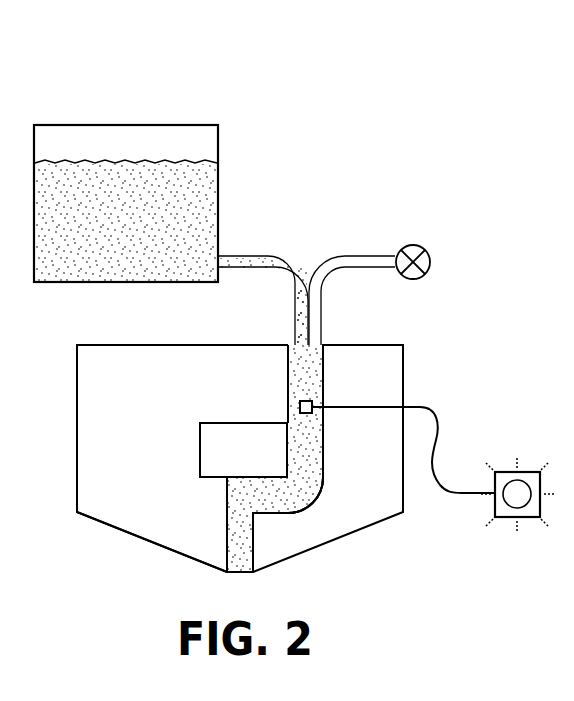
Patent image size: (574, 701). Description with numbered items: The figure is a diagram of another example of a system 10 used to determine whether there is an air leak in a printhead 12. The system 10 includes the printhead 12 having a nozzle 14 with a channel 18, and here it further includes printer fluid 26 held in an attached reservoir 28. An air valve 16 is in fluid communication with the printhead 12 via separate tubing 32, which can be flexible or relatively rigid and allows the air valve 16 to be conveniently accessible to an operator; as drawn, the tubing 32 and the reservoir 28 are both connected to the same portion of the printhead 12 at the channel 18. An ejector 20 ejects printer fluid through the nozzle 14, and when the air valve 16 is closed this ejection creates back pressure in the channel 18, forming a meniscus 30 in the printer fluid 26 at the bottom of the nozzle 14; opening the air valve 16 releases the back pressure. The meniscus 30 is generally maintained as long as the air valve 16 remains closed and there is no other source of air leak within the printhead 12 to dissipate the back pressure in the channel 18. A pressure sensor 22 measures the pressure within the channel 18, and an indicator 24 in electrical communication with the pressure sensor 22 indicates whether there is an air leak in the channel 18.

The system 10 is at (314, 149).
The printhead 12 is at (63, 369).
The nozzle 14 is at (156, 546).
The air valve 16 is at (413, 245).
The channel 18 is at (313, 492).
The ejector 20 is at (256, 460).
The pressure sensor 22 is at (298, 407).
The indicator 24 is at (530, 472).
The printer fluid 26 is at (178, 162).
The reservoir 28 is at (126, 125).
The meniscus 30 is at (240, 575).
The tubing 32 is at (355, 256).